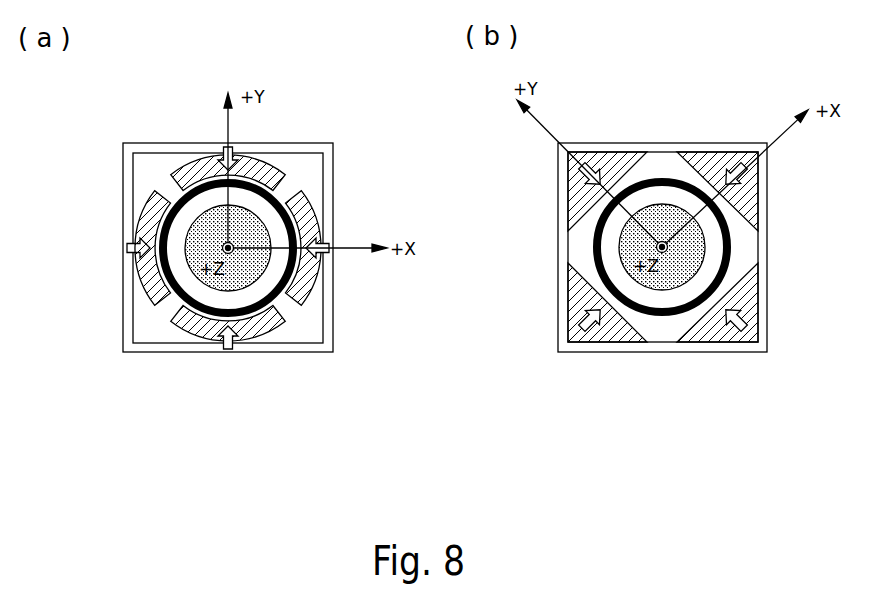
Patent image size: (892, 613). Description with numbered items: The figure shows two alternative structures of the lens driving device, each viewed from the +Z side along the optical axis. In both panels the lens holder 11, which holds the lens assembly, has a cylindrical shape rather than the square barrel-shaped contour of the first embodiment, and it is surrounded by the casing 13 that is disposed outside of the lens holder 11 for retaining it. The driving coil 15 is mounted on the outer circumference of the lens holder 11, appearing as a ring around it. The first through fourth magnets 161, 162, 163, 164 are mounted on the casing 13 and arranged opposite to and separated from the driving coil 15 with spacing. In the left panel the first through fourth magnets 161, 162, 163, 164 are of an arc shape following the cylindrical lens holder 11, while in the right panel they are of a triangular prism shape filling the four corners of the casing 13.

The lens holder 11 is at (263, 205).
The casing 13 is at (295, 143).
The driving coil 15 is at (175, 210).
The first magnet 161 is at (147, 235).
The second magnet 162 is at (197, 162).
The third magnet 163 is at (315, 226).
The fourth magnet 164 is at (255, 337).